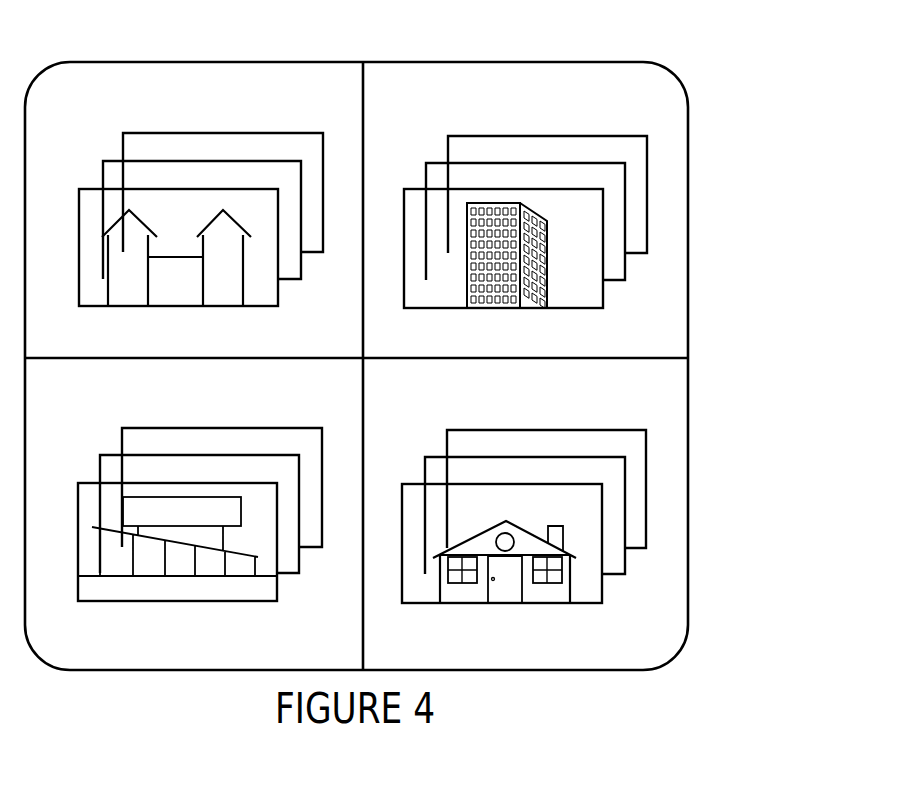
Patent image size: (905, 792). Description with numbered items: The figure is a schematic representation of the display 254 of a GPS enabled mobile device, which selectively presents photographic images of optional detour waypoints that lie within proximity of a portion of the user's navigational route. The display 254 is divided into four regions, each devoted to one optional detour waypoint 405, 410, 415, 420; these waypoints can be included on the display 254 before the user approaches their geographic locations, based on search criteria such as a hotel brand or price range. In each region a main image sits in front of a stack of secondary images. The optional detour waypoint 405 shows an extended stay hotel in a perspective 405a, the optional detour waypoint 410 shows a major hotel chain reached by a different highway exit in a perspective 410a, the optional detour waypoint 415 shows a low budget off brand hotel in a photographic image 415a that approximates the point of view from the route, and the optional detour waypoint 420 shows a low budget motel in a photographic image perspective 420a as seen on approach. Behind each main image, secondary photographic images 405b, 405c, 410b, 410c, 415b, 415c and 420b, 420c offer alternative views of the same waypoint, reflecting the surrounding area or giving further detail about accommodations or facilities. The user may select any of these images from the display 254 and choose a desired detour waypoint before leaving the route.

The display 254 is at (490, 62).
The optional detour waypoint 405 is at (90, 104).
The perspective 405a is at (182, 306).
The secondary photographic image 405b is at (280, 281).
The secondary photographic image 405c is at (218, 133).
The optional detour waypoint 410 is at (418, 104).
The perspective 410a is at (505, 308).
The secondary photographic image 410b is at (610, 282).
The secondary photographic image 410c is at (540, 136).
The optional detour waypoint 415 is at (415, 653).
The photographic image 415a is at (503, 604).
The secondary photographic image 415b is at (610, 578).
The secondary photographic image 415c is at (540, 430).
The optional detour waypoint 420 is at (87, 652).
The photographic image perspective 420a is at (180, 601).
The secondary photographic image 420b is at (285, 577).
The secondary photographic image 420c is at (215, 428).